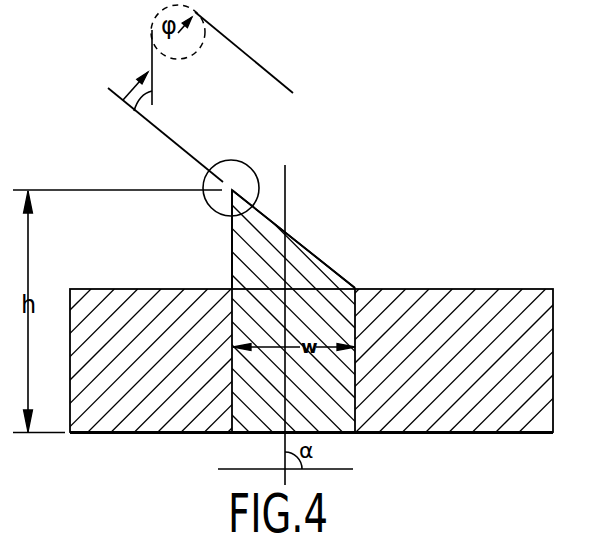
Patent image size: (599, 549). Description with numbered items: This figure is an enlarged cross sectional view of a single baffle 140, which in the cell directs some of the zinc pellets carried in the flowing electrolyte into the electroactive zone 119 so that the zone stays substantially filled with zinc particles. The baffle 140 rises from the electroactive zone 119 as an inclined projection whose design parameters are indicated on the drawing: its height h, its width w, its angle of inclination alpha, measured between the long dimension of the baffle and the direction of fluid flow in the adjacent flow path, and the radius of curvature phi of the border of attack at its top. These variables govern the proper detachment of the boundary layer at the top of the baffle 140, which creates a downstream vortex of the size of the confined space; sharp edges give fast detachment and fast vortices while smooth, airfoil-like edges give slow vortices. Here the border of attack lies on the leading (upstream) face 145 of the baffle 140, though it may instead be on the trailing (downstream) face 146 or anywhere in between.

The electroactive zone 119 is at (517, 288).
The baffle 140 is at (262, 214).
The leading (upstream) face 145 is at (232, 253).
The trailing (downstream) face 146 is at (232, 40).